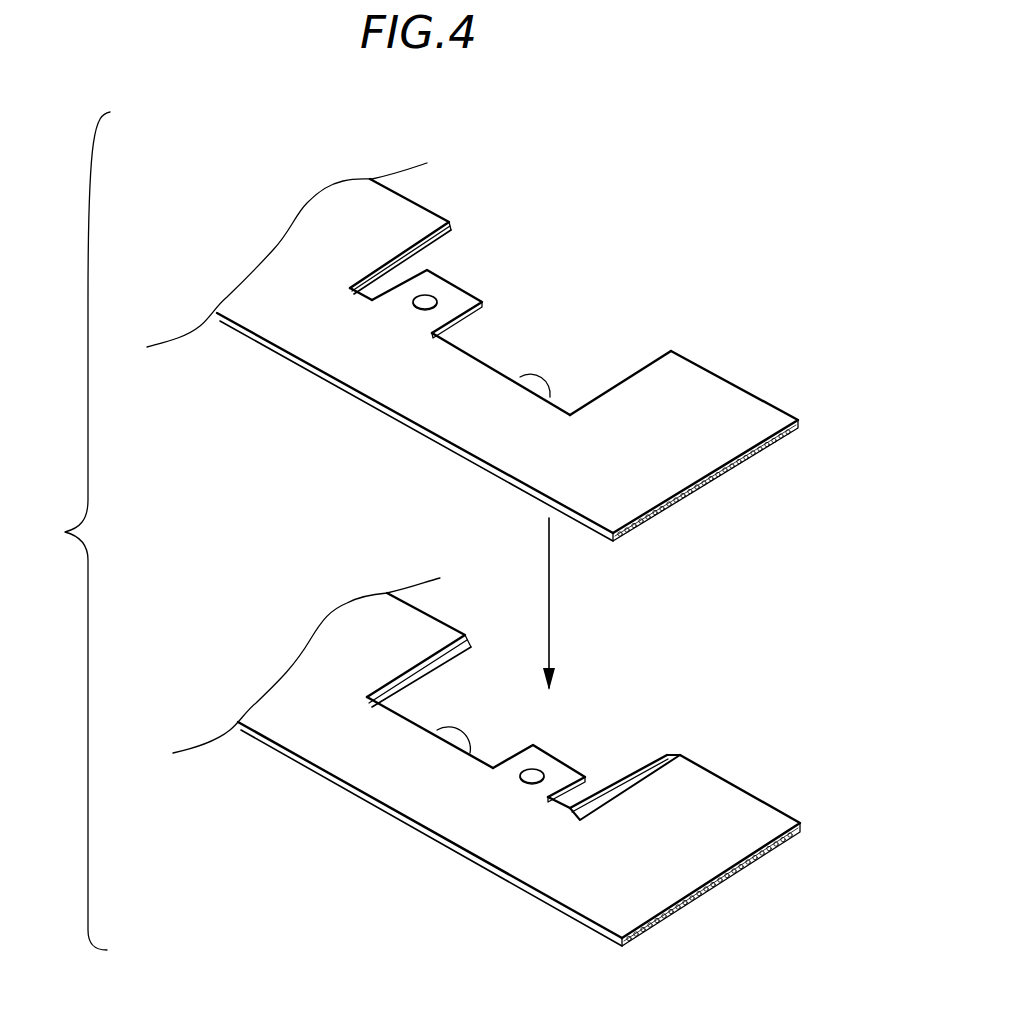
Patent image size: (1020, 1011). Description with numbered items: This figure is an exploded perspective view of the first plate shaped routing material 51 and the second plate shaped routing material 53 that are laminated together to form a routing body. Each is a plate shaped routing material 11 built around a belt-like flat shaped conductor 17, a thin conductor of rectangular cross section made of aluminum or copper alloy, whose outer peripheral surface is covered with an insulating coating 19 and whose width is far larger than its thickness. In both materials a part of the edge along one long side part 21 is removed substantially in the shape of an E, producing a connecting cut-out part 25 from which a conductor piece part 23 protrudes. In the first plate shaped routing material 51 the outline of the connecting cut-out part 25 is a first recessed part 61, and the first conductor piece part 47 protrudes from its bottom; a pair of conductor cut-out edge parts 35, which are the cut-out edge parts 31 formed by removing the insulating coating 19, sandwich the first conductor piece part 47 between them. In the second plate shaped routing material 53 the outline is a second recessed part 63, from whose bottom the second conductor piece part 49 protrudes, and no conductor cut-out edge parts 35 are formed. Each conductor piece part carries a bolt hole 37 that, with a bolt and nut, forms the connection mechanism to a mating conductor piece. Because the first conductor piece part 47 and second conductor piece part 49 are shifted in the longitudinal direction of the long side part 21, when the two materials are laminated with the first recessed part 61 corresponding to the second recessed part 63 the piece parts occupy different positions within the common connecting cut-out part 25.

The plate shaped routing material 11 is at (473, 559).
The flat shaped conductor 17 is at (703, 488).
The insulating coating 19 is at (693, 407).
The long side part 21 is at (423, 207).
The conductor piece part 23 is at (517, 507).
The connecting cut-out part 25 is at (578, 344).
The cut-out edge part 31 is at (413, 678).
The conductor cut-out edge part 35 is at (477, 757).
The bolt hole 37 is at (433, 298).
The first conductor piece part 47 is at (563, 760).
The second conductor piece part 49 is at (482, 293).
The first plate shaped routing material 51 is at (356, 800).
The second plate shaped routing material 53 is at (300, 376).
The first recessed part 61 is at (437, 730).
The second recessed part 63 is at (520, 377).